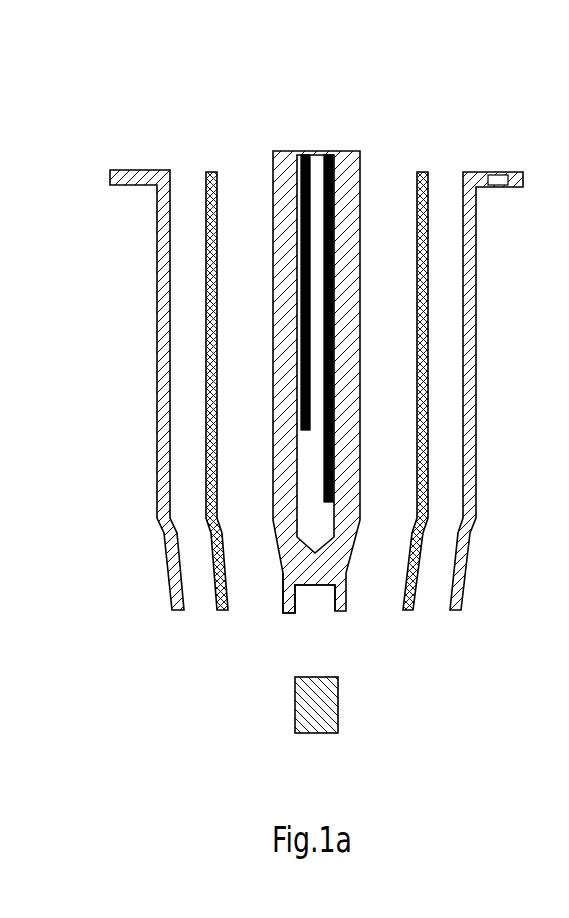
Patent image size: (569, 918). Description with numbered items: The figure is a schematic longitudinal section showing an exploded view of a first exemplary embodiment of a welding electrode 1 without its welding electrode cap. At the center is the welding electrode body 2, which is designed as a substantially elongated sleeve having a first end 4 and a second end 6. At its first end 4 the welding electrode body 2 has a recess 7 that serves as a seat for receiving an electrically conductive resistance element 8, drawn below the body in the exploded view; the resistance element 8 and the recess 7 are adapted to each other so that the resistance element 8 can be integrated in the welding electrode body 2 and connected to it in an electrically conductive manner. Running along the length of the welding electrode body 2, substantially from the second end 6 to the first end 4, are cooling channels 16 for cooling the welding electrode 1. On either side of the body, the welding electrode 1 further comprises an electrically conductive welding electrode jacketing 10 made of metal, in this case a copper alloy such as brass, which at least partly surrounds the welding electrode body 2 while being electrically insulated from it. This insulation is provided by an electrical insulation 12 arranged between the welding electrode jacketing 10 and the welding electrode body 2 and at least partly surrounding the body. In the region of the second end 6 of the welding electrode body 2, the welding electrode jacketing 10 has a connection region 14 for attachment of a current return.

The welding electrode 1 is at (60, 83).
The welding electrode body 2 is at (285, 186).
The first end 4 is at (283, 637).
The second end 6 is at (333, 118).
The recess 7 is at (320, 610).
The resistance element 8 is at (308, 720).
The welding electrode jacketing 10 is at (160, 343).
The electrical insulation 12 is at (205, 172).
The connection region 14 is at (500, 190).
The cooling channels 16 is at (312, 170).